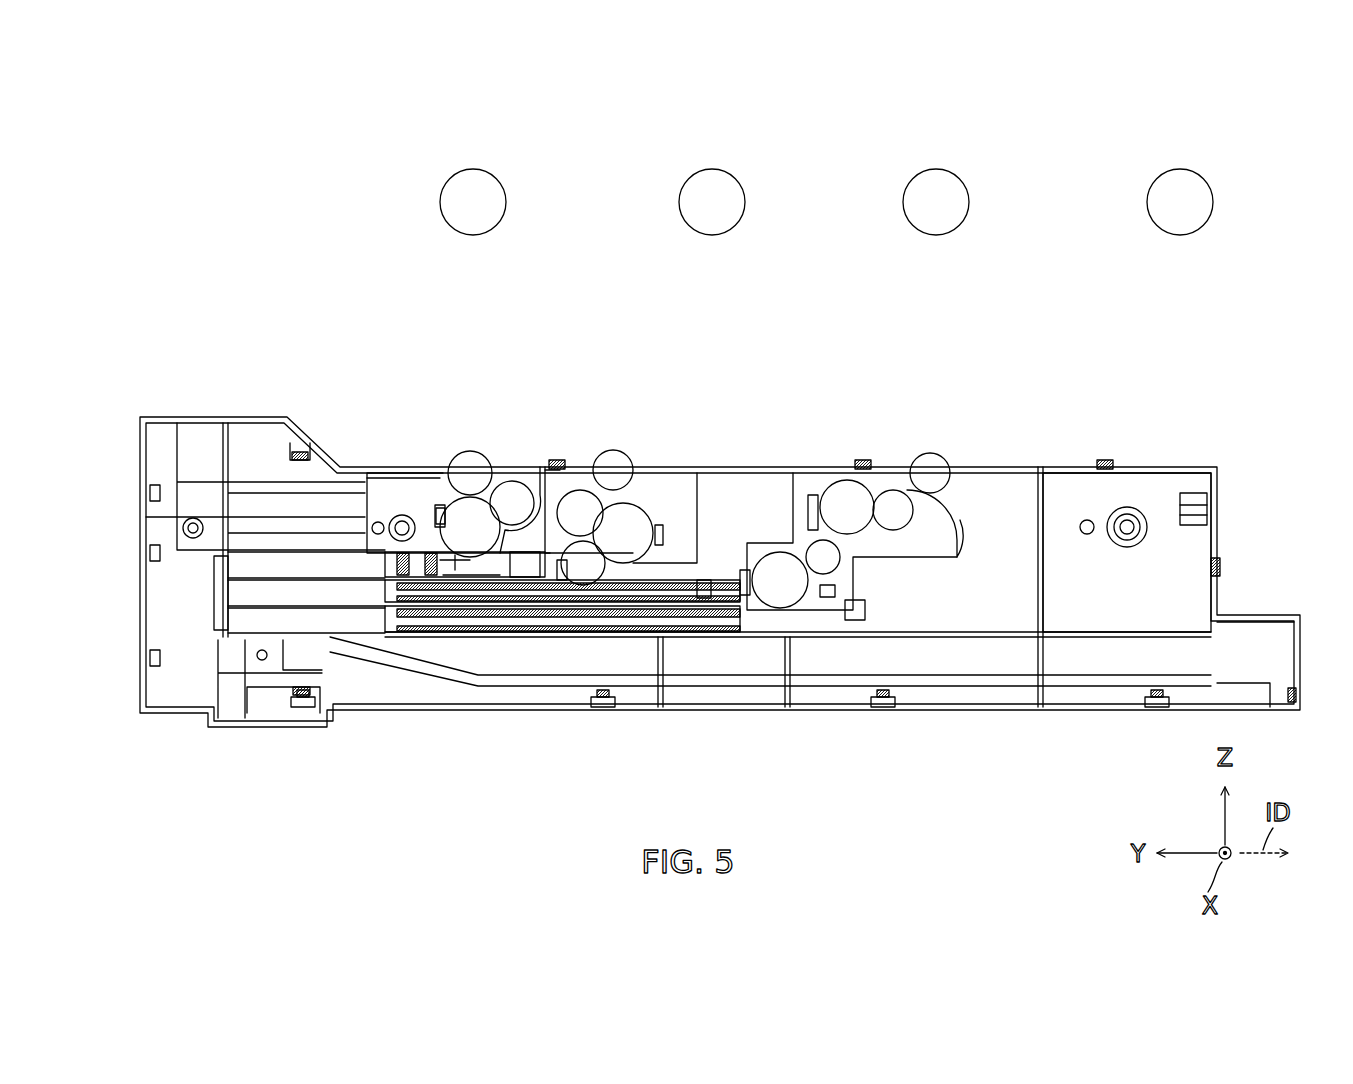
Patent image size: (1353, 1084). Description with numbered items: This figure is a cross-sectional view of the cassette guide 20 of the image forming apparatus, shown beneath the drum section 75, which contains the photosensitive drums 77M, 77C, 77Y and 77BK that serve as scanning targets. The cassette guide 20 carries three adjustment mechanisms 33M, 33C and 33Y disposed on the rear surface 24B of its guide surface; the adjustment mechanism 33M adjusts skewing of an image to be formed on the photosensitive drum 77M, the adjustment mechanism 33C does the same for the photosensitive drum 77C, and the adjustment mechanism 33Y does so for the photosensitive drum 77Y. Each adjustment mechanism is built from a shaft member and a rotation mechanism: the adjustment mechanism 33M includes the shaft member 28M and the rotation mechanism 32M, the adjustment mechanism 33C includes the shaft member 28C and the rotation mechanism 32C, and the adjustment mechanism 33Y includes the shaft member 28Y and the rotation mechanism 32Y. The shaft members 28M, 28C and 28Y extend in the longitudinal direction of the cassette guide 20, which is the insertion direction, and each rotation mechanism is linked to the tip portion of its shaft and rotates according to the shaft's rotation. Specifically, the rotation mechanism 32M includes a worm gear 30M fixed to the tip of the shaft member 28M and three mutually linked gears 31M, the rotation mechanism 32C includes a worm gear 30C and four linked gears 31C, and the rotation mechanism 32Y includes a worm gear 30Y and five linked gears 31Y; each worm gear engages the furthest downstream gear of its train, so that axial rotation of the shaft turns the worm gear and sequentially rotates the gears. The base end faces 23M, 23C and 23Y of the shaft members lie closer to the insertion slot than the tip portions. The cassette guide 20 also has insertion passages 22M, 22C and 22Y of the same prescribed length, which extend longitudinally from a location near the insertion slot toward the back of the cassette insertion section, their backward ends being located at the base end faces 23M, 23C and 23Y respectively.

The cassette guide 20 is at (1224, 447).
The insertion passage 22M is at (243, 563).
The insertion passage 22C is at (237, 592).
The insertion passage 22Y is at (240, 616).
The base end face 23M is at (383, 560).
The base end face 23C is at (383, 592).
The base end face 23Y is at (383, 620).
The rear surface 24B is at (1147, 487).
The shaft member 28M is at (383, 553).
The shaft member 28C is at (557, 470).
The shaft member 28Y is at (778, 553).
The worm gear 30M is at (437, 505).
The worm gear 30C is at (705, 590).
The worm gear 30Y is at (862, 622).
The gears 31M is at (510, 500).
The gears 31C is at (672, 575).
The gears 31Y is at (923, 466).
The rotation mechanism 32M is at (401, 418).
The rotation mechanism 32C is at (631, 427).
The rotation mechanism 32Y is at (946, 465).
The adjustment mechanism 33M is at (384, 393).
The adjustment mechanism 33C is at (608, 405).
The adjustment mechanism 33Y is at (913, 438).
The drum section 75 is at (792, 168).
The photosensitive drum 77M is at (478, 169).
The photosensitive drum 77C is at (717, 169).
The photosensitive drum 77Y is at (940, 169).
The photosensitive drum 77BK is at (1185, 169).